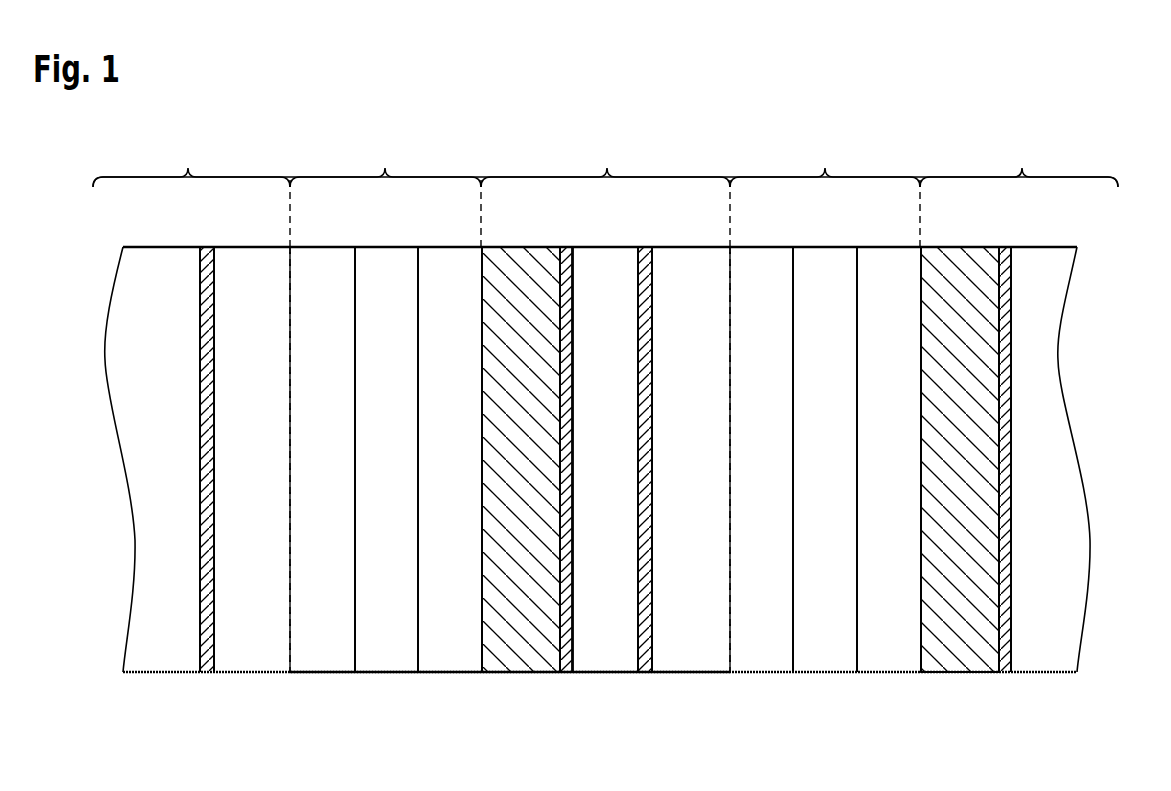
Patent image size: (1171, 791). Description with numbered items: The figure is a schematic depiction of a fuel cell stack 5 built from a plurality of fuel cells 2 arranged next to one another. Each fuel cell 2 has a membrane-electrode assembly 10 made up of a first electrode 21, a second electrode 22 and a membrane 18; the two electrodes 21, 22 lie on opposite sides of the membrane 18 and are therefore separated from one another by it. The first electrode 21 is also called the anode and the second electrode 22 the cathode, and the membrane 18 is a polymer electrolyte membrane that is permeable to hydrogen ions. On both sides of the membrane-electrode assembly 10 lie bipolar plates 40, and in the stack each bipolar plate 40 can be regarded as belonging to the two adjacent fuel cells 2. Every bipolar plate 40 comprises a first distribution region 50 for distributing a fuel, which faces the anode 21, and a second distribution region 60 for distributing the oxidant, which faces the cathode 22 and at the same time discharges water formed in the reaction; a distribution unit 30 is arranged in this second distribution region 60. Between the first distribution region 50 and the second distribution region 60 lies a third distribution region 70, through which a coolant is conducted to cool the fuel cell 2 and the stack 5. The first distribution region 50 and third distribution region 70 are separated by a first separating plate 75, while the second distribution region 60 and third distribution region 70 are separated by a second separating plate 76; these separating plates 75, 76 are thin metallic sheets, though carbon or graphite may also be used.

The fuel cell stack 5 is at (1123, 158).
The fuel cell 2 is at (392, 680).
The membrane-electrode assembly 10 is at (605, 163).
The membrane 18 is at (388, 262).
The first electrode 21 is at (321, 262).
The second electrode 22 is at (451, 262).
The distribution unit 30 is at (520, 656).
The bipolar plate 40 is at (605, 163).
The first distribution region 50 is at (251, 262).
The second distribution region 60 is at (526, 262).
The third distribution region 70 is at (158, 262).
The first separating plate 75 is at (209, 656).
The second separating plate 76 is at (567, 656).